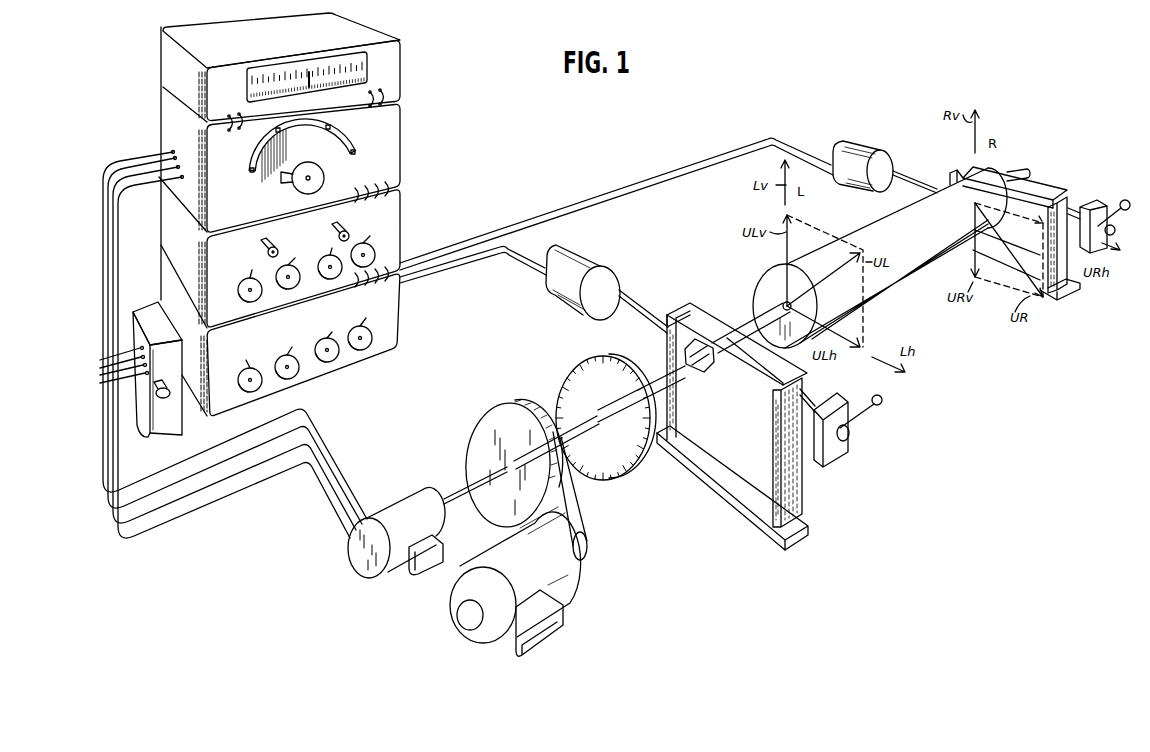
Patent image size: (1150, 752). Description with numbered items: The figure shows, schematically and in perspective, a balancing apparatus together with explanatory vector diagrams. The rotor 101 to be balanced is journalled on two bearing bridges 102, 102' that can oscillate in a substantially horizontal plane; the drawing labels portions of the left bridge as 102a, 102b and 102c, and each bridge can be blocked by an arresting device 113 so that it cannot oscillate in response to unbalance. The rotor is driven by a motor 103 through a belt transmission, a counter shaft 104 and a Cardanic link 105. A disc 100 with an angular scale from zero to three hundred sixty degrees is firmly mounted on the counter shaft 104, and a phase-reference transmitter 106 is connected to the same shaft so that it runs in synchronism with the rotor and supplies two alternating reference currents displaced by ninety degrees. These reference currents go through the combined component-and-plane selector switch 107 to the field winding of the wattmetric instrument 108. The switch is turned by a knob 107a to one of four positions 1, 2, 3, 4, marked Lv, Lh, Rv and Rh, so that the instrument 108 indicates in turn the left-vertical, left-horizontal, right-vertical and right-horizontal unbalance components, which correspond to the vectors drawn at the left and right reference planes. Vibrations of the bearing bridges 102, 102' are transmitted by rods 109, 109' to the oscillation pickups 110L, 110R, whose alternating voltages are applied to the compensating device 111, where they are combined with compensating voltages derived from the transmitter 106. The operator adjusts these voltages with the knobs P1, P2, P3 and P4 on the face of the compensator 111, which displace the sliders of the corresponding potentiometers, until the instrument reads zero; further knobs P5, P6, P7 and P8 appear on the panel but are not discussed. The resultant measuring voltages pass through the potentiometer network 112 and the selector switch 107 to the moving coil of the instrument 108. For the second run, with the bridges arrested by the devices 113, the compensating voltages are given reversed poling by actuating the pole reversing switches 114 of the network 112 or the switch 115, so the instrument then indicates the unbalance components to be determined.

The disc 100 is at (628, 478).
The rotor 101 is at (886, 287).
The bearing bridge 102 is at (737, 336).
The bearing bridge 102' is at (1015, 227).
The left upright of frame 102a is at (687, 397).
The right upright of frame 102b is at (794, 494).
The base of frame 102c is at (730, 494).
The motor 103 is at (562, 598).
The counter shaft 104 is at (561, 405).
The Cardanic link 105 is at (684, 355).
The phase-reference transmitter 106 is at (403, 497).
The component-and-plane selector switch 107 is at (388, 108).
The knob 107a is at (297, 194).
The wattmetric instrument 108 is at (397, 48).
The rod 109 is at (643, 310).
The rod 109' is at (917, 171).
The oscillation pickup 110L is at (553, 298).
The oscillation pickup 110R is at (873, 145).
The compensating device 111 is at (217, 413).
The potentiometer network 112 is at (396, 195).
The arresting device 113 is at (850, 456).
The pole reversing switch 114 is at (332, 228).
The switch 115 is at (154, 439).
The first switch position 1 is at (250, 170).
The second switch position 2 is at (276, 130).
The third switch position 3 is at (329, 126).
The fourth switch position 4 is at (355, 150).
The potentiometer knob P1 is at (246, 371).
The potentiometer knob P2 is at (287, 356).
The potentiometer knob P3 is at (327, 341).
The potentiometer knob P4 is at (363, 327).
The potentiometer P5 is at (238, 292).
The potentiometer P6 is at (294, 267).
The potentiometer P7 is at (322, 270).
The potentiometer P8 is at (372, 235).